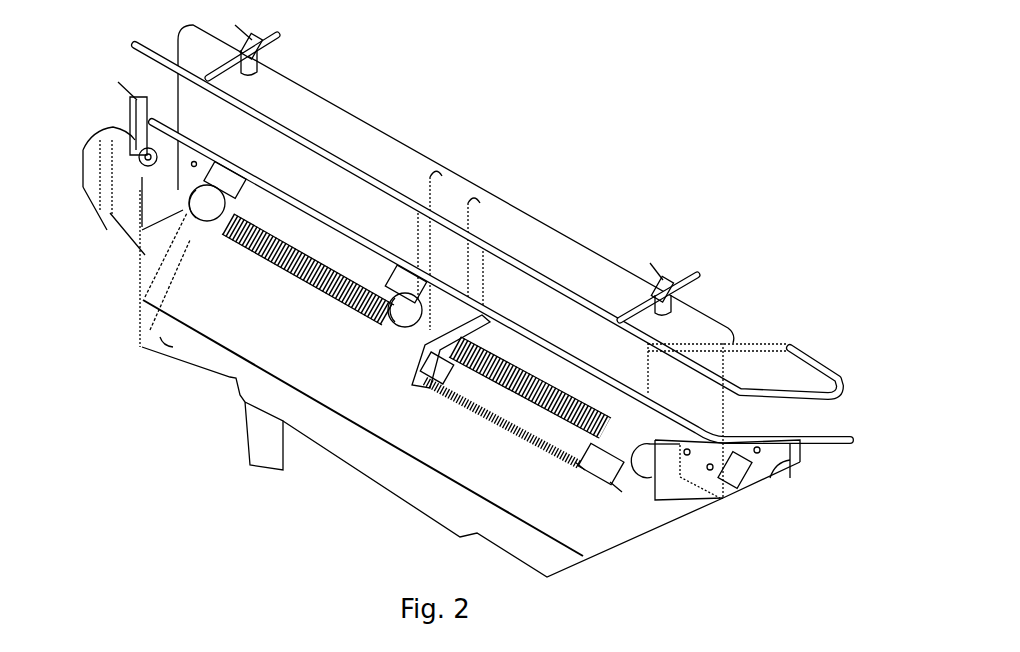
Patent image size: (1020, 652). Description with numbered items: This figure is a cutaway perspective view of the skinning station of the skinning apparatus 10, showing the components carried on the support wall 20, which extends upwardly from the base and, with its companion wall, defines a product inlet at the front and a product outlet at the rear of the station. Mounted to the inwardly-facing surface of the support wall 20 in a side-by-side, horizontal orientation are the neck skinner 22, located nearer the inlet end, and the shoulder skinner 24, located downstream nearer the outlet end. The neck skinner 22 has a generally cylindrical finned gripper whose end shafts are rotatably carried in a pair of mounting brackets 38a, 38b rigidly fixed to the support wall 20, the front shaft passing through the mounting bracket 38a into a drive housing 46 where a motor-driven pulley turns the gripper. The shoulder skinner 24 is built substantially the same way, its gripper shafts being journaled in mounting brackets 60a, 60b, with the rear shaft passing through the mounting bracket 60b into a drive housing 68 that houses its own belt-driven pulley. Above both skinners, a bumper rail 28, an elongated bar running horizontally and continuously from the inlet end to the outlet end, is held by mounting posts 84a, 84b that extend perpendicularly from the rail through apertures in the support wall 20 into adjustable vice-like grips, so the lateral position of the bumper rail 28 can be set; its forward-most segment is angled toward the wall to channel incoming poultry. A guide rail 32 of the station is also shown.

The skinning apparatus 10 is at (662, 139).
The support wall 20 is at (405, 162).
The neck skinner 22 is at (508, 393).
The shoulder skinner 24 is at (305, 243).
The bumper rail 28 is at (820, 444).
The guide rail 32 is at (535, 277).
The mounting bracket 38a is at (592, 484).
The mounting bracket 38b is at (428, 340).
The drive housing 46 is at (653, 467).
The mounting bracket 60a is at (388, 318).
The mounting bracket 60b is at (217, 223).
The drive housing 68 is at (193, 203).
The mounting post 84a is at (675, 403).
The mounting post 84b is at (220, 140).